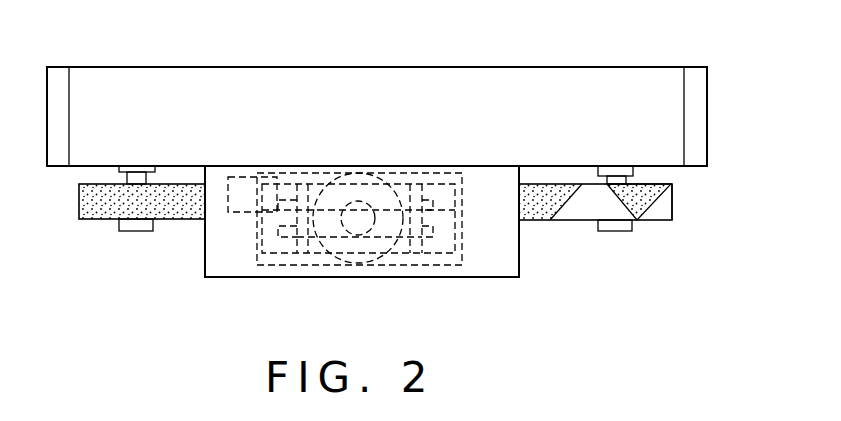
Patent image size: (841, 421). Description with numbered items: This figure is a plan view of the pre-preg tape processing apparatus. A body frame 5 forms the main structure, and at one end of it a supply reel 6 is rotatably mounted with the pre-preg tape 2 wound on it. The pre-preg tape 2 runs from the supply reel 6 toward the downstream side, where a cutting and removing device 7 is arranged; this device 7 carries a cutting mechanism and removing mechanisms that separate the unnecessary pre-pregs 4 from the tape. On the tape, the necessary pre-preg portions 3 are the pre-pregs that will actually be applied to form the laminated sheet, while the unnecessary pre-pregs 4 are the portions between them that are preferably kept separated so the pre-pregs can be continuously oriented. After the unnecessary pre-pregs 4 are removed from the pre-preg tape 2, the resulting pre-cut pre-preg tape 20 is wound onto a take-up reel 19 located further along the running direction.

The pre-preg tape 2 is at (102, 207).
The necessary pre-preg portions 3 is at (653, 207).
The unnecessary pre-pregs 4 is at (575, 210).
The body frame 5 is at (550, 80).
The supply reel 6 is at (140, 225).
The cutting and removing device 7 is at (442, 278).
The take-up reel 19 is at (617, 228).
The pre-cut pre-preg tape 20 is at (673, 203).